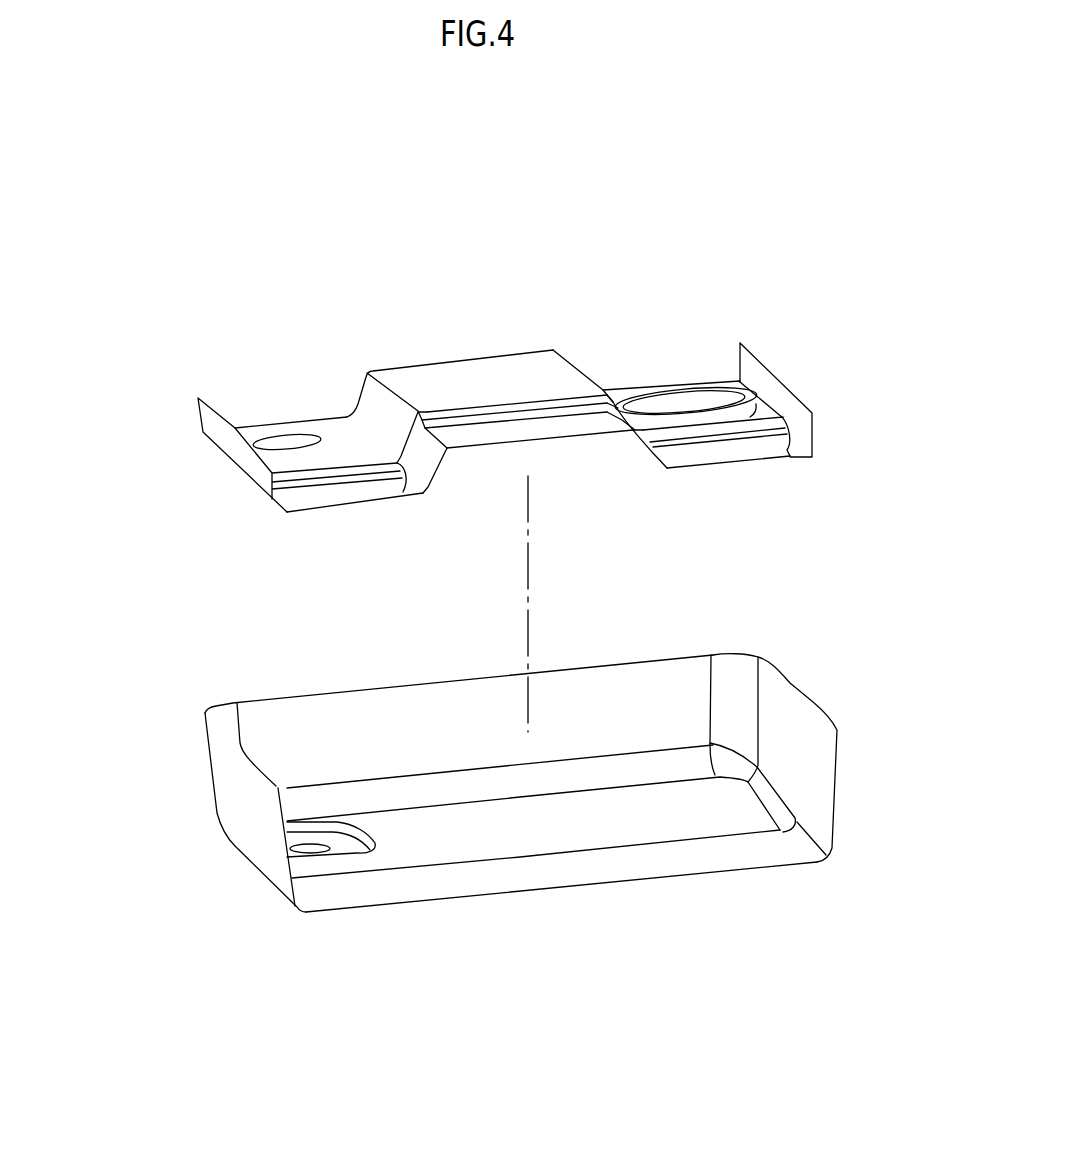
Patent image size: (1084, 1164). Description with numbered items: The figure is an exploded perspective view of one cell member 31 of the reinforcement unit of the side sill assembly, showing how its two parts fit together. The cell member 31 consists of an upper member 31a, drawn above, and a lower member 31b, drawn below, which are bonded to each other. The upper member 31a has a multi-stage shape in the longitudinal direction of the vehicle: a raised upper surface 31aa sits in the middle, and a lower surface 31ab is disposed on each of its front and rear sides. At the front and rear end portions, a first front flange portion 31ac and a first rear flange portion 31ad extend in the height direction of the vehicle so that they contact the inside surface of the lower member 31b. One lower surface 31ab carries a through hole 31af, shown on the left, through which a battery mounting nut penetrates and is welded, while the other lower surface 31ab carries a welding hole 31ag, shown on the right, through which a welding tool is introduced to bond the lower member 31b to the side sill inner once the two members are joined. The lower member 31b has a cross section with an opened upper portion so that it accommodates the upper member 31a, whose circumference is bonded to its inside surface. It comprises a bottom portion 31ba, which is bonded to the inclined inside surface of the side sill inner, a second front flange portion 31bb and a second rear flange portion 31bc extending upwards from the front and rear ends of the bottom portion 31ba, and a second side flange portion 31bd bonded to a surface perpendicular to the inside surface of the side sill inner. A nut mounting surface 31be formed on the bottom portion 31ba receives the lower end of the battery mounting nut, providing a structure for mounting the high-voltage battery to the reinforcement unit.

The cell member 31 is at (832, 254).
The upper member 31a is at (338, 312).
The upper surface 31aa is at (485, 372).
The lower surface 31ab is at (328, 457).
The first front flange portion 31ac is at (207, 418).
The first rear flange portion 31ad is at (760, 374).
The through hole 31af is at (289, 444).
The welding hole 31ag is at (683, 404).
The lower member 31b is at (179, 834).
The bottom portion 31ba is at (603, 828).
The second front flange portion 31bb is at (258, 860).
The second rear flange portion 31bc is at (817, 782).
The second side flange portion 31bd is at (622, 688).
The nut mounting surface 31be is at (343, 850).